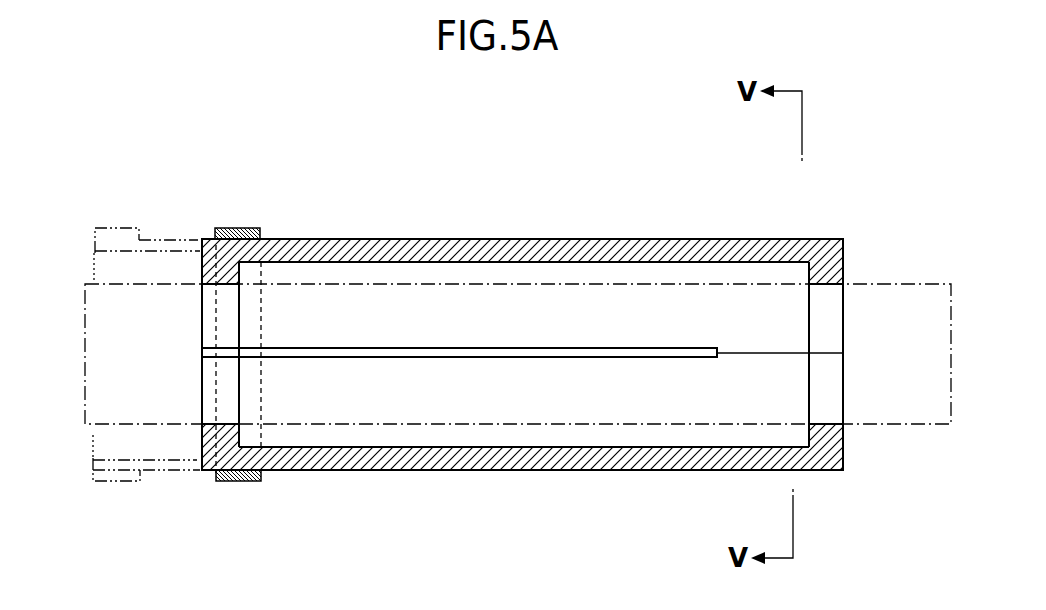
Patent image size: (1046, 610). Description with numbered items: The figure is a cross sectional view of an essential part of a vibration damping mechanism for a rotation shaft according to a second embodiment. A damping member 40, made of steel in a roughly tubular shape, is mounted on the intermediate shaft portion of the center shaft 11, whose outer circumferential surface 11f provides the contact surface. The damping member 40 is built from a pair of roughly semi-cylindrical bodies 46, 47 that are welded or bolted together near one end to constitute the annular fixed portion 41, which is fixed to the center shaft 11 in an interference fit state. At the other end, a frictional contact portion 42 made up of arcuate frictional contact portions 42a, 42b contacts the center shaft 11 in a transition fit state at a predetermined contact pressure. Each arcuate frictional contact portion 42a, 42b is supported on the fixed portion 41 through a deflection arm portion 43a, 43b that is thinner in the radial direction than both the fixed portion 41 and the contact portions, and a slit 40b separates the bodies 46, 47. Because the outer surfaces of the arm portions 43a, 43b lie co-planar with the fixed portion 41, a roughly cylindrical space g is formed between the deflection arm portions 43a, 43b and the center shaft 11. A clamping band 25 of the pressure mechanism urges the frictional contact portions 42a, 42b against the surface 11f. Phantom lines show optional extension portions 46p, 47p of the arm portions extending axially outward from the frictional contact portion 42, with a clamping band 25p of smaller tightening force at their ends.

The damping member 40 is at (651, 207).
The slit 40b is at (470, 353).
The fixed portion 41 is at (843, 263).
The frictional contact portion 42 is at (202, 273).
The arcuate frictional contact portion 42a is at (228, 284).
The arcuate frictional contact portion 42b is at (228, 423).
The deflection arm portion 43a is at (497, 262).
The deflection arm portion 43b is at (462, 447).
The semi-cylindrical body 46 is at (710, 252).
The semi-cylindrical body 47 is at (691, 459).
The extension portion 46p is at (153, 238).
The extension portion 47p is at (173, 473).
The clamping band 25 is at (245, 228).
The clamping band 25p is at (120, 483).
The center shaft 11 is at (915, 424).
The outer circumferential surface 11f is at (128, 278).
The space g is at (389, 277).